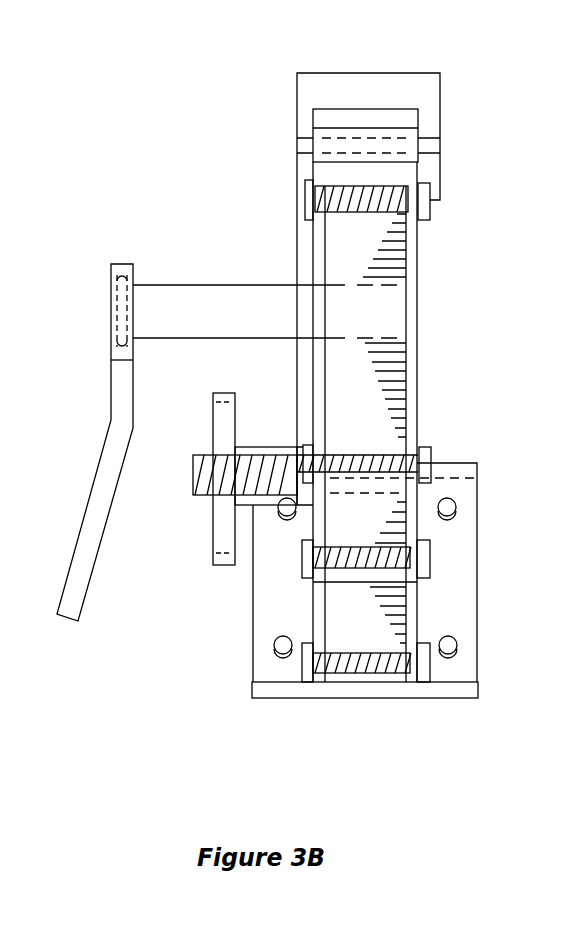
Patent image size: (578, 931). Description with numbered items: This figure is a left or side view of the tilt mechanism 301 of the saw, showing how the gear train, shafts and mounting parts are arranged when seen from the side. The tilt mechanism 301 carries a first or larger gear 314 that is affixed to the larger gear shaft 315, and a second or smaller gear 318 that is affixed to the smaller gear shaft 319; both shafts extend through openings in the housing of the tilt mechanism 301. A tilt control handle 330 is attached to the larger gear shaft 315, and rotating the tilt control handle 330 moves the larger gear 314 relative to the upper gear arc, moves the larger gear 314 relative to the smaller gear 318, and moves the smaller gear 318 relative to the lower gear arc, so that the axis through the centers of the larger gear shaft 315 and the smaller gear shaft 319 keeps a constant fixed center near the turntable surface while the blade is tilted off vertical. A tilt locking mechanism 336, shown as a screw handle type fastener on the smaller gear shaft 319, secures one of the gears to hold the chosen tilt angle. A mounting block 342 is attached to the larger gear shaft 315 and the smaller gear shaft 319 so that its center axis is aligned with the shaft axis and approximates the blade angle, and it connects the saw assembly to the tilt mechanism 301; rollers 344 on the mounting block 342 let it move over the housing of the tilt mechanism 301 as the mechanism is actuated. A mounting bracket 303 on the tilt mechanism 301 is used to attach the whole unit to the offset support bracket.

The tilt mechanism 301 is at (418, 367).
The mounting bracket 303 is at (478, 508).
The larger gear 314 is at (362, 224).
The larger gear shaft 315 is at (245, 284).
The smaller gear 318 is at (363, 613).
The smaller gear shaft 319 is at (203, 457).
The tilt control handle 330 is at (83, 522).
The tilt locking mechanism 336 is at (223, 565).
The mounting block 342 is at (328, 73).
The rollers 344 is at (400, 109).